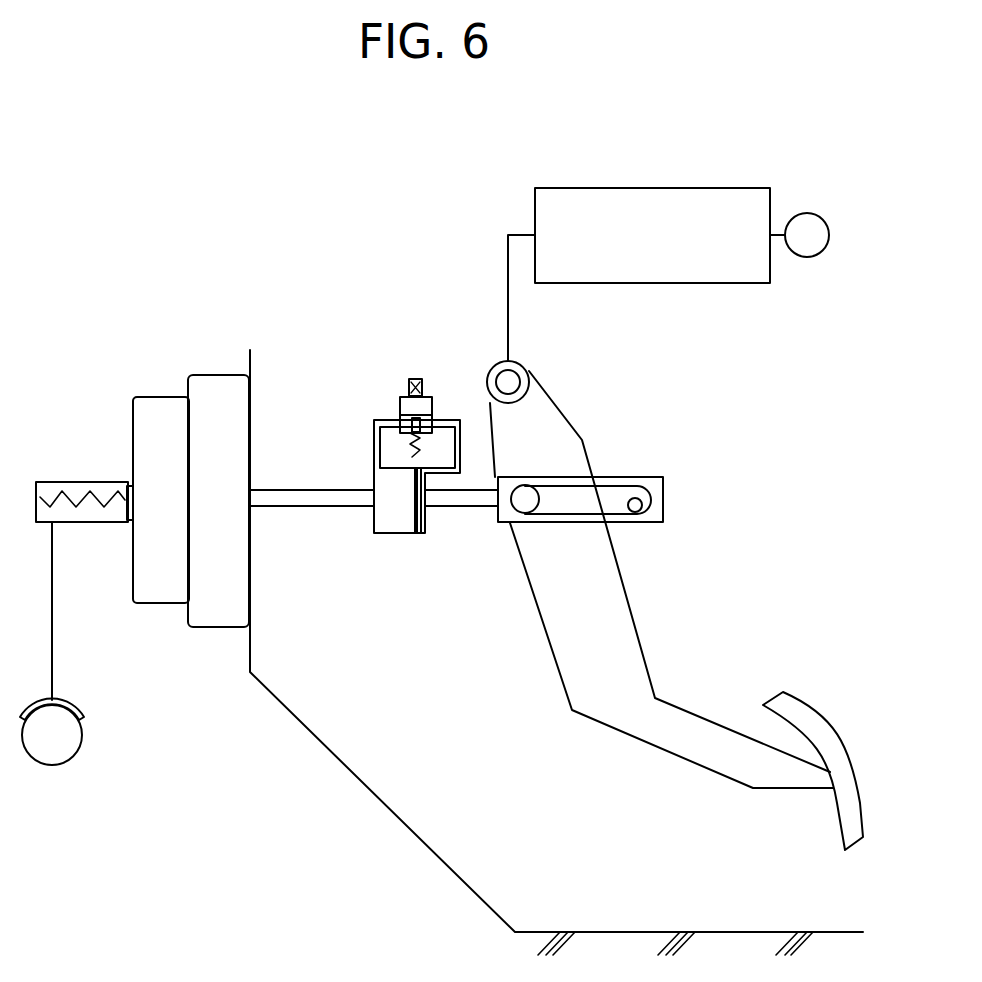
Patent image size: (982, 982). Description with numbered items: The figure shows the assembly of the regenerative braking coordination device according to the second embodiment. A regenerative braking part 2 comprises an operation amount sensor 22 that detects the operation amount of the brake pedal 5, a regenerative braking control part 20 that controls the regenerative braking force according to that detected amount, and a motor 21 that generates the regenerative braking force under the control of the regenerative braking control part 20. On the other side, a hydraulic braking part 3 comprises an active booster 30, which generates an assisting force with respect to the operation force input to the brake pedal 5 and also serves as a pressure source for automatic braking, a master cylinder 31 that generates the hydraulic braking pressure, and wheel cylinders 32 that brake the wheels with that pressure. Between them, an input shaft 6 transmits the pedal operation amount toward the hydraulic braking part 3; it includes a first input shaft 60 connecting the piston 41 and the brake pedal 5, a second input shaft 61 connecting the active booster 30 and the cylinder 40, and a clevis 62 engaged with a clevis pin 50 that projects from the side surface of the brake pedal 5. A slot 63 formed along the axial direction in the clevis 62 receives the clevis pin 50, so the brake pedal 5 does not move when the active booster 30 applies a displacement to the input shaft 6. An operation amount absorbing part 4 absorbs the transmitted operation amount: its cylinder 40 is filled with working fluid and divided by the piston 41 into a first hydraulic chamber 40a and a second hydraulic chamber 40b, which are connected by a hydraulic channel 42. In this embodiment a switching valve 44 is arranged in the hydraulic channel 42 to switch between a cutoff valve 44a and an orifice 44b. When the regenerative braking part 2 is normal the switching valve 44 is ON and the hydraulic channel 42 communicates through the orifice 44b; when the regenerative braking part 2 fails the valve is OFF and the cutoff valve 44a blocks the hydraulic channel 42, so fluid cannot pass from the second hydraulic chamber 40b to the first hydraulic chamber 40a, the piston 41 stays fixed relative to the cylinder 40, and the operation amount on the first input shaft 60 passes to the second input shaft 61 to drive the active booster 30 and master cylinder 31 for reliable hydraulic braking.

The regenerative braking part 2 is at (680, 173).
The regenerative braking control part 20 is at (555, 188).
The motor 21 is at (810, 213).
The operation amount sensor 22 is at (523, 377).
The hydraulic braking part 3 is at (99, 634).
The active booster 30 is at (222, 375).
The master cylinder 31 is at (62, 482).
The wheel cylinders 32 is at (50, 767).
The operation amount absorbing part 4 is at (360, 457).
The cylinder 40 is at (400, 533).
The first hydraulic chamber 40a is at (428, 525).
The second hydraulic chamber 40b is at (393, 507).
The piston 41 is at (414, 513).
The hydraulic channel 42 is at (377, 420).
The switching valve 44 is at (410, 361).
The cutoff valve 44a is at (398, 420).
The orifice 44b is at (427, 397).
The brake pedal 5 is at (583, 437).
The clevis pin 50 is at (525, 503).
The input shaft 6 is at (680, 480).
The first input shaft 60 is at (473, 487).
The second input shaft 61 is at (310, 490).
The clevis 62 is at (663, 503).
The slot 63 is at (633, 510).